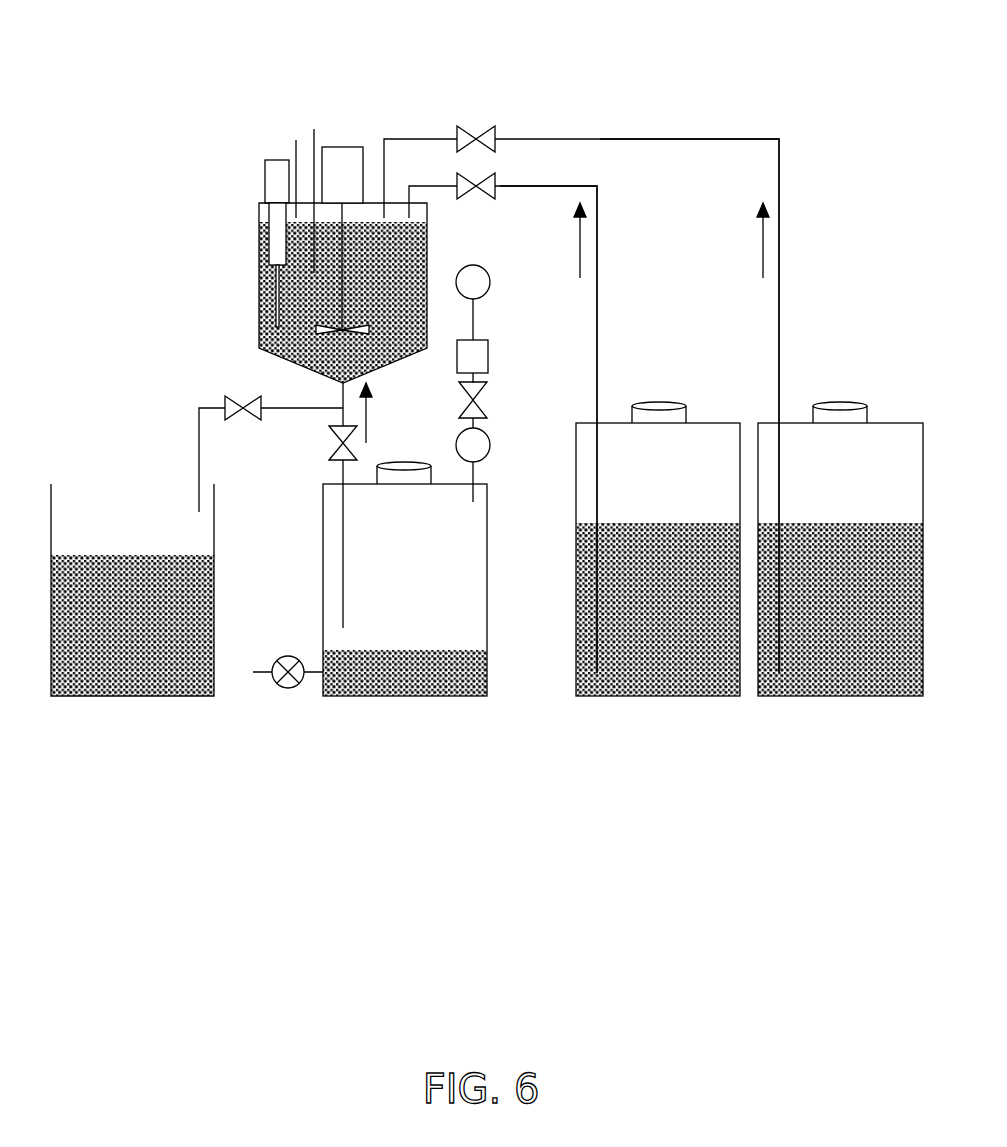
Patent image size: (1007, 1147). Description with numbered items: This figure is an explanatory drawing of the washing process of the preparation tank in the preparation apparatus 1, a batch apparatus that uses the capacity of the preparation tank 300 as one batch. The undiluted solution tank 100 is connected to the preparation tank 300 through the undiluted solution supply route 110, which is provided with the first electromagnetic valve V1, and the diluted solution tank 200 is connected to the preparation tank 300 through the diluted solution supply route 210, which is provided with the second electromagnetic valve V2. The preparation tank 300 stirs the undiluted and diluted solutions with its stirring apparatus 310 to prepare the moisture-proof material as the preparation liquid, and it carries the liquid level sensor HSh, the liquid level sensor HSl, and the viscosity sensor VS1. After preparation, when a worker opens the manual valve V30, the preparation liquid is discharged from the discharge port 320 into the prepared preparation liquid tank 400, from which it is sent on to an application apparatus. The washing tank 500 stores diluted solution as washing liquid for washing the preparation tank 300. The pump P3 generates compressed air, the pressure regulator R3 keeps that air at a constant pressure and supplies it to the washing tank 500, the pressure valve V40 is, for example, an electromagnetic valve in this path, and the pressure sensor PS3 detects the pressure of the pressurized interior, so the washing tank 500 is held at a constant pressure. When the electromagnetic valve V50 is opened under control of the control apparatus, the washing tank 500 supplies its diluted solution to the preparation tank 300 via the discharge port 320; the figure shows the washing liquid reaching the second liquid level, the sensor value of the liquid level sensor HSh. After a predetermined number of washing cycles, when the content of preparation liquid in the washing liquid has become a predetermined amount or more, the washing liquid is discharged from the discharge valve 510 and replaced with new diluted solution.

The preparation apparatus 1 is at (830, 66).
The second electromagnetic valve V2 is at (478, 126).
The first electromagnetic valve V1 is at (480, 201).
The diluted solution supply route 210 is at (640, 141).
The undiluted solution supply route 110 is at (537, 188).
The preparation tank 300 is at (259, 301).
The discharge port 320 is at (338, 386).
The viscosity sensor VS1 is at (269, 242).
The liquid level sensor HSh is at (296, 147).
The liquid level sensor HSl is at (313, 133).
The stirring apparatus 310 is at (343, 146).
The pump P3 is at (490, 282).
The pressure regulator R3 is at (489, 353).
The pressure valve V40 is at (480, 392).
The pressure sensor PS3 is at (490, 445).
The electromagnetic valve V50 is at (337, 444).
The manual valve V30 is at (239, 423).
The prepared preparation liquid tank 400 is at (130, 697).
The washing tank 500 is at (405, 697).
The discharge valve 510 is at (288, 689).
The undiluted solution tank 100 is at (654, 697).
The diluted solution tank 200 is at (839, 697).